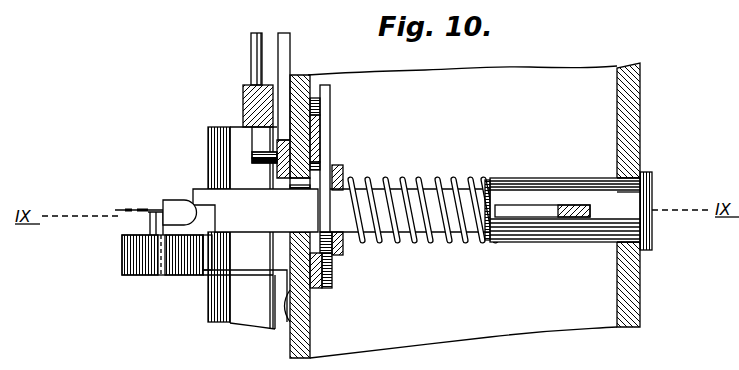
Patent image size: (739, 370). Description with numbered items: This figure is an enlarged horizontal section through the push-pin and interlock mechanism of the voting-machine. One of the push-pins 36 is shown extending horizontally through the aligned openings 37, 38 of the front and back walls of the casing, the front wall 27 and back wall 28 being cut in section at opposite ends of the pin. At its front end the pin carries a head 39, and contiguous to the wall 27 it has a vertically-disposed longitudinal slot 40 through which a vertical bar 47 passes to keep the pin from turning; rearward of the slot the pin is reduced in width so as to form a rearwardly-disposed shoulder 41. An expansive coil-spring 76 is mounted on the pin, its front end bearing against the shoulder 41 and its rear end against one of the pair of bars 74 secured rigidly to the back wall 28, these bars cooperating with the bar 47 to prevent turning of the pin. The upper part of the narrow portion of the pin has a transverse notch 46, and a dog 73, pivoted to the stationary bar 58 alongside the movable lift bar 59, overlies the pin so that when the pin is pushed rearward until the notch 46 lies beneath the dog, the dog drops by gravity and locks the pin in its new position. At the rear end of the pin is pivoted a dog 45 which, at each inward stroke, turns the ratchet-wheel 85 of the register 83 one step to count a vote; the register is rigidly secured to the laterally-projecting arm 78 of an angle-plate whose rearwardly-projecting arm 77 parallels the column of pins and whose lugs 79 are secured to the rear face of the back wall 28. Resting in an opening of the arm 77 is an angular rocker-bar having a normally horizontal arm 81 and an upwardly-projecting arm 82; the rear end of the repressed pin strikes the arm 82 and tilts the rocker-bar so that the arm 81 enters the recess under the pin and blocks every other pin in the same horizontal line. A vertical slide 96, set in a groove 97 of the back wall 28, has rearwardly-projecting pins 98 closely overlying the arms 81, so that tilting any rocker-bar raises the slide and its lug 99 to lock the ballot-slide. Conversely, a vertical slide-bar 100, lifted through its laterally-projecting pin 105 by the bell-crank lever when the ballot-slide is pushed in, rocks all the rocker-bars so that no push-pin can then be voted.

The wall 27 is at (640, 84).
The housing wall 28 is at (293, 75).
The push-pins 36 is at (621, 204).
The openings 37 is at (616, 174).
The openings 38 is at (310, 182).
The head 39 is at (652, 201).
The longitudinal slot 40 is at (545, 207).
The shoulder 41 is at (486, 180).
The dog 45 is at (174, 199).
The transverse notch 46 is at (345, 188).
The vertical bar 47 is at (575, 217).
The stationary bar 58 is at (317, 289).
The movable bar 59 is at (320, 113).
The dogs 73 is at (326, 116).
The bars 74 is at (332, 200).
The expansive coil-springs 76 is at (430, 181).
The rearwardly-projecting arm 77 is at (220, 272).
The laterally-projecting arm 78 is at (187, 274).
The lugs 79 is at (285, 324).
The arm 81 is at (239, 322).
The arm 82 is at (205, 323).
The register 83 is at (122, 262).
The ratchet-wheel 85 is at (118, 211).
The vertical slide 96 is at (277, 145).
The vertical groove 97 is at (312, 115).
The pins 98 is at (252, 157).
The lug 99 is at (287, 43).
The slide-bar 100 is at (243, 98).
The pin 105 is at (251, 47).